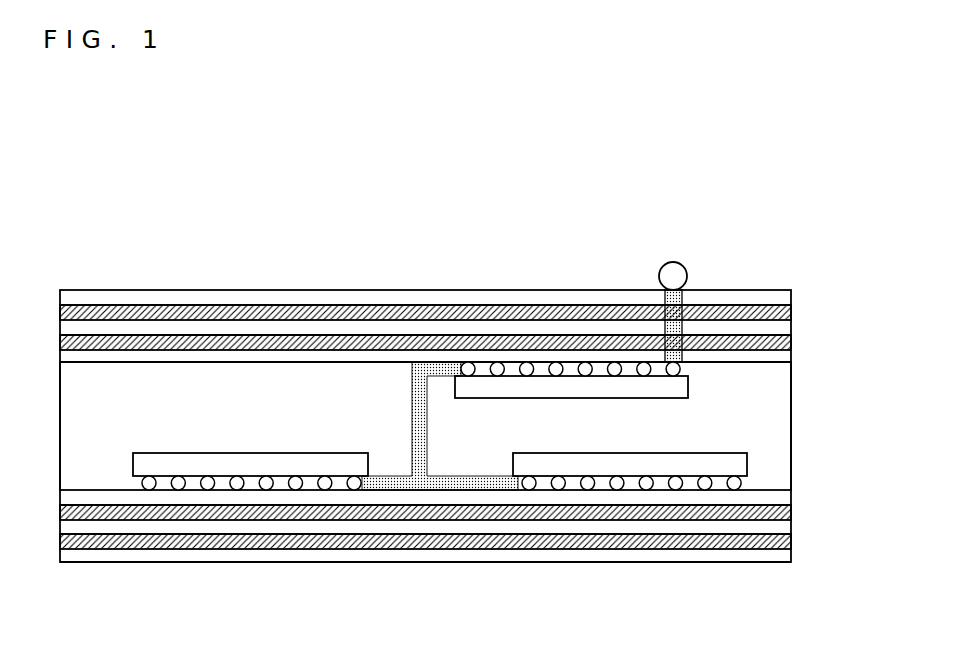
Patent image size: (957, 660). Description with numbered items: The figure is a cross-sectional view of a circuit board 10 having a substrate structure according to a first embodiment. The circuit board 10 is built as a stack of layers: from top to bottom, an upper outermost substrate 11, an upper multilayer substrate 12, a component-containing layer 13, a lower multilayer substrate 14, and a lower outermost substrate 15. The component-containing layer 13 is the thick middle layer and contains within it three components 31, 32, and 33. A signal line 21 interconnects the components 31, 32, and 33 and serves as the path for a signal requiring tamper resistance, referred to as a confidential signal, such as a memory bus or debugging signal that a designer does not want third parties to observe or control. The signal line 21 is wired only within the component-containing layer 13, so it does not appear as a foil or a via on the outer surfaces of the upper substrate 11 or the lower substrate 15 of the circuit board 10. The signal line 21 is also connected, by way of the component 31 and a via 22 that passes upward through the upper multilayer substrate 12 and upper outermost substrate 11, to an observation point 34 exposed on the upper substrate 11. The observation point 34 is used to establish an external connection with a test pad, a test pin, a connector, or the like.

The circuit board 10 is at (184, 165).
The upper outermost substrate 11 is at (789, 292).
The upper multilayer substrate 12 is at (789, 323).
The component-containing layer 13 is at (785, 418).
The lower multilayer substrate 14 is at (785, 527).
The lower outermost substrate 15 is at (785, 555).
The signal line 21 is at (457, 482).
The via 22 is at (681, 318).
The component 31 is at (505, 383).
The component 32 is at (243, 468).
The component 33 is at (595, 468).
The observation point 34 is at (671, 273).